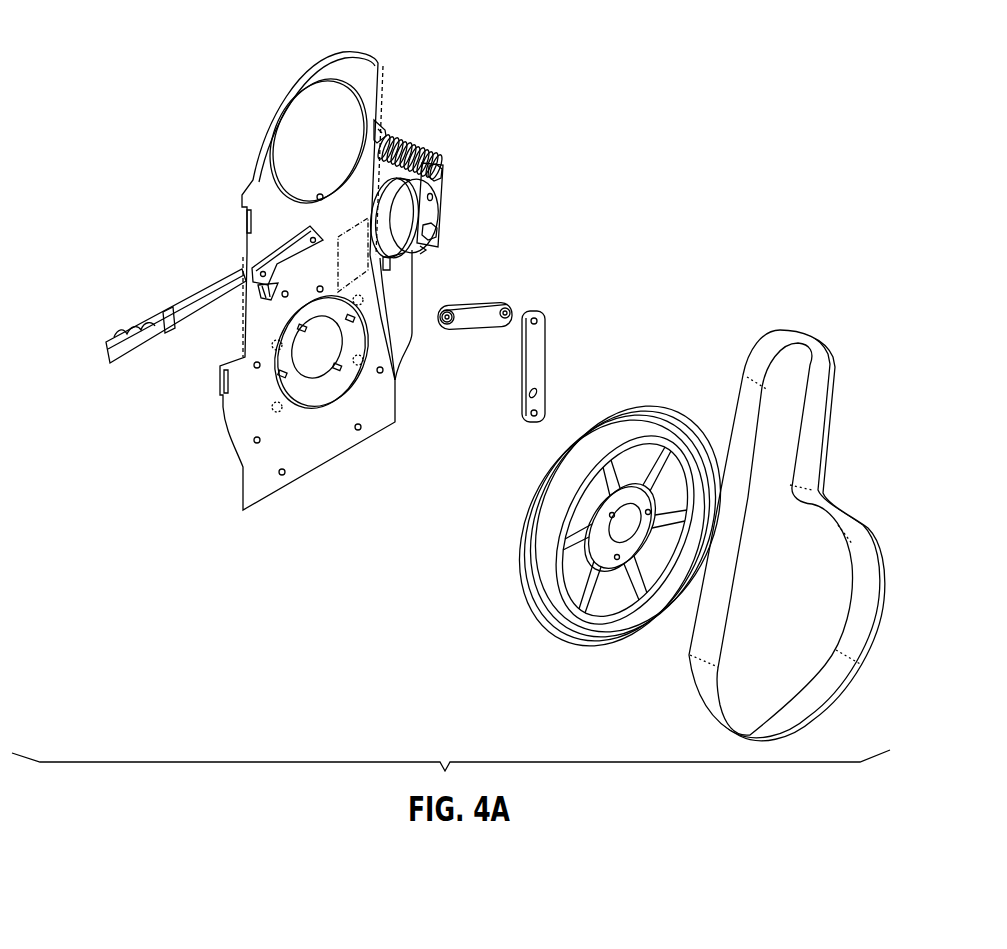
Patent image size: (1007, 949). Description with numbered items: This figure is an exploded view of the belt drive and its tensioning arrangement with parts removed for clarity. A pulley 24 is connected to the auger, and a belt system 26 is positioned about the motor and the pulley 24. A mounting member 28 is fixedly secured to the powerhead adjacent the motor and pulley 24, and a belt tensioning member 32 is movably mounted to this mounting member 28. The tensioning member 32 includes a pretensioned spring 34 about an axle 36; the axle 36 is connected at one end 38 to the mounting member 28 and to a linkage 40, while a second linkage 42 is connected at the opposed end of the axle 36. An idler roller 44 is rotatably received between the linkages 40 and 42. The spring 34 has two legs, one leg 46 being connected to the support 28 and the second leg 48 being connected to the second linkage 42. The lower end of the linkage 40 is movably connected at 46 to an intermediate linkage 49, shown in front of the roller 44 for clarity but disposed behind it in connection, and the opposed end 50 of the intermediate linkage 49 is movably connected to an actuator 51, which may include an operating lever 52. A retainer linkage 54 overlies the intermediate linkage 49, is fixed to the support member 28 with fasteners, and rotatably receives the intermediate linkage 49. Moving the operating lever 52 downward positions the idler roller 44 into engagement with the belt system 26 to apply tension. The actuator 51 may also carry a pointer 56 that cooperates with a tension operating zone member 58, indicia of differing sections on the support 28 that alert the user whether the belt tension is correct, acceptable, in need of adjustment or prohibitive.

The pulley 24 is at (613, 437).
The belt system 26 is at (780, 333).
The mounting member 28 is at (317, 437).
The belt tensioning member 32 is at (457, 137).
The pretensioned spring 34 is at (410, 160).
The axle 36 is at (363, 127).
The end of axle 38 is at (375, 110).
The linkage 40 is at (393, 333).
The second linkage 42 is at (438, 213).
The idler roller 44 is at (420, 250).
The spring leg / connection point 46 is at (383, 132).
The second spring leg 48 is at (440, 195).
The intermediate linkage 49 is at (477, 322).
The opposed end of intermediate linkage 50 is at (457, 304).
The actuator 51 is at (252, 248).
The operating lever 52 is at (130, 325).
The retainer linkage 54 is at (537, 377).
The pointer 56 is at (248, 297).
The tension operating zone member 58 is at (219, 392).